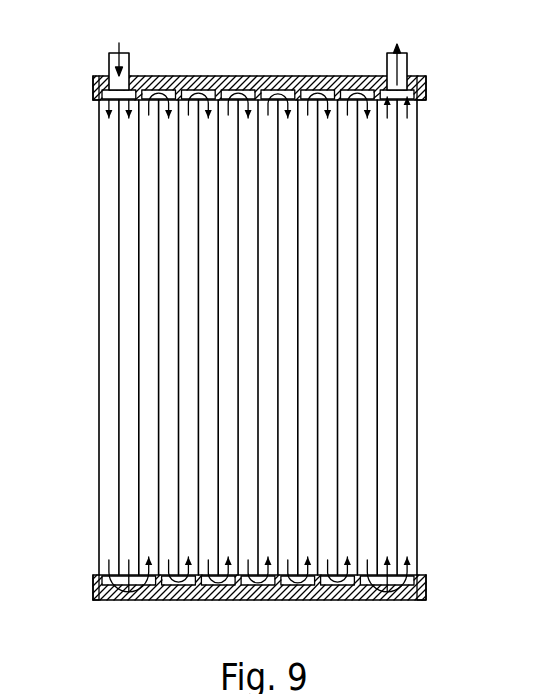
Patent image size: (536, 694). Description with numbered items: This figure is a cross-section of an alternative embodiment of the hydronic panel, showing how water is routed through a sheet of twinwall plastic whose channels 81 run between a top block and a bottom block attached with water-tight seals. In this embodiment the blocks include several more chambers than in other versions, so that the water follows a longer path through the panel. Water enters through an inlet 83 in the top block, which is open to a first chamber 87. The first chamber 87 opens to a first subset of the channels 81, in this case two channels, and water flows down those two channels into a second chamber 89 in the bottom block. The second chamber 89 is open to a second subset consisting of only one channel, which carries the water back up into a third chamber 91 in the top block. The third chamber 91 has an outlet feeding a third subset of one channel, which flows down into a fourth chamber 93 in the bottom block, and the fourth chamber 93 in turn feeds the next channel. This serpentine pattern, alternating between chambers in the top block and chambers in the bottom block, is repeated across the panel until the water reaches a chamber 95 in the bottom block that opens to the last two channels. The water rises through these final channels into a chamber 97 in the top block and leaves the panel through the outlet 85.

The channels 81 is at (417, 355).
The inlet 83 is at (130, 60).
The outlet 85 is at (407, 57).
The first chamber 87 is at (93, 97).
The second chamber 89 is at (99, 580).
The third chamber 91 is at (208, 76).
The fourth chamber 93 is at (185, 600).
The chamber 95 is at (426, 578).
The chamber 97 is at (426, 97).